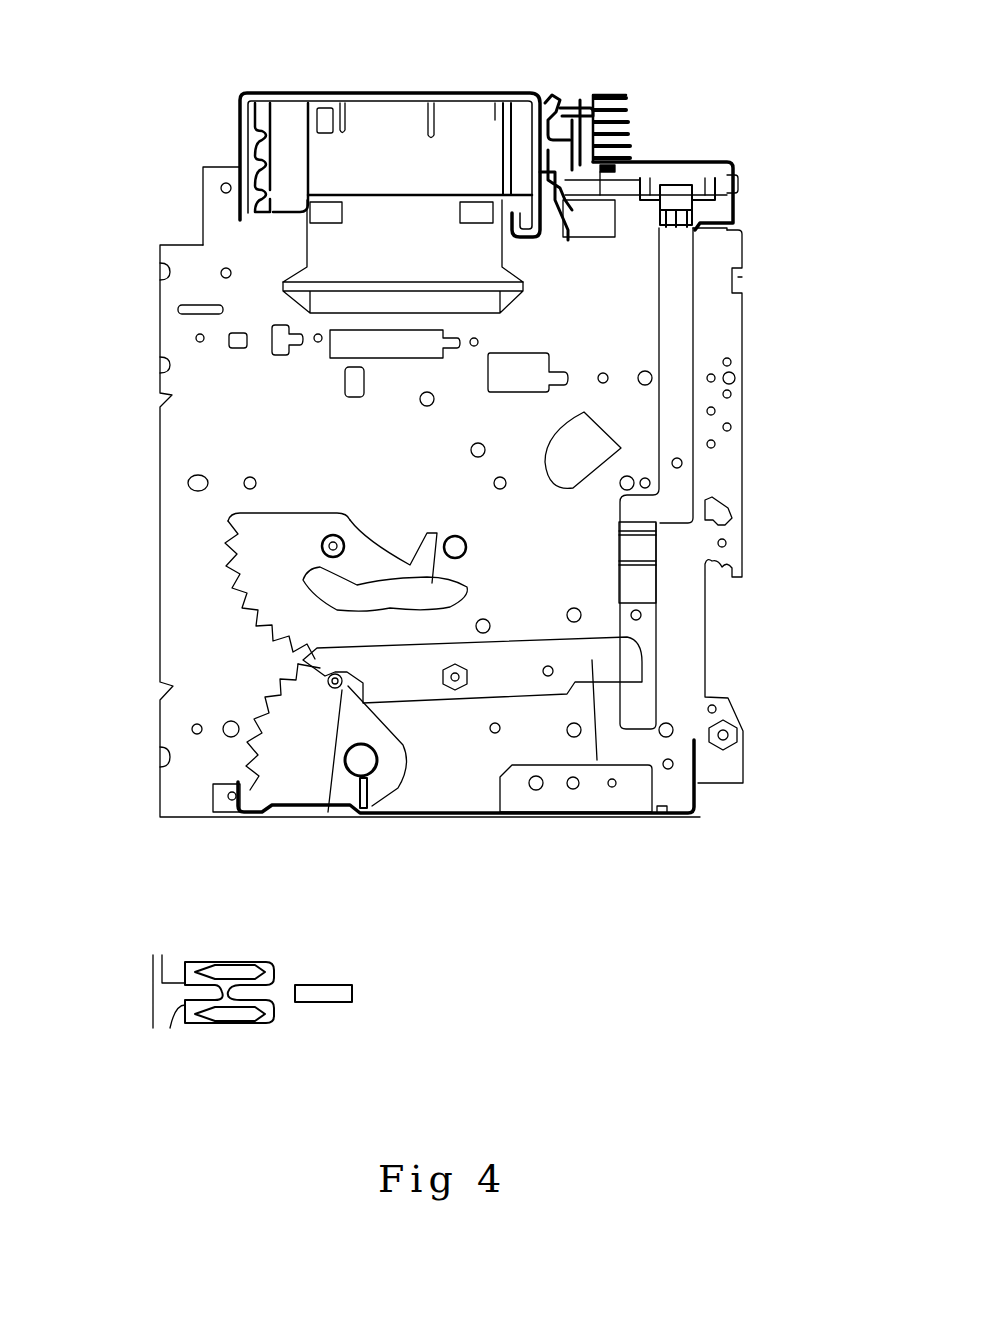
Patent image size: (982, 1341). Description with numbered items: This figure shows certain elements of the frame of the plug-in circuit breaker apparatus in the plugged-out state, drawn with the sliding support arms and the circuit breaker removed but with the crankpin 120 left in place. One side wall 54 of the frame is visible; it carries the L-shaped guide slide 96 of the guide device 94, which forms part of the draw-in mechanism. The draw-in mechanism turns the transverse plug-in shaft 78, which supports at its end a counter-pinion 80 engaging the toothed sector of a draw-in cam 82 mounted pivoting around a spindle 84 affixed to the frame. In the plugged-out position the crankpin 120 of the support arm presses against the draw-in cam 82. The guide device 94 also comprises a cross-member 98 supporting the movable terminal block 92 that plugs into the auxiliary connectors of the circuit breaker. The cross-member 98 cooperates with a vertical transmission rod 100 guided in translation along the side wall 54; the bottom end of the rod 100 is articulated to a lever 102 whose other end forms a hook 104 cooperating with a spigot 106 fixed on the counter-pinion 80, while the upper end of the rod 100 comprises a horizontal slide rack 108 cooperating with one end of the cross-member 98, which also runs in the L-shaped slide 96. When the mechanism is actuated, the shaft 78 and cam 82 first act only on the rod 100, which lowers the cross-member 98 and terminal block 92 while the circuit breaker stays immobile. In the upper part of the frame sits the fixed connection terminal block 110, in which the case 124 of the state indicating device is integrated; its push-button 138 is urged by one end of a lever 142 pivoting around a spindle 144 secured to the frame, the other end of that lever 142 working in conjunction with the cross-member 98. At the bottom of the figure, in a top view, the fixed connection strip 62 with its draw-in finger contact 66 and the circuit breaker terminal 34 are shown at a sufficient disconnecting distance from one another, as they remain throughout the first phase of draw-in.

The terminal 34 is at (328, 995).
The side wall 54 is at (720, 473).
The fixed connection strip 62 is at (165, 1013).
The draw-in finger contact 66 is at (252, 1010).
The transverse plug-in shaft 78 is at (360, 758).
The counter-pinion 80 is at (285, 735).
The draw-in cam 82 is at (257, 570).
The spindle 84 is at (322, 544).
The movable terminal block 92 is at (680, 177).
The guide device 94 is at (695, 255).
The L-shaped guide slide 96 is at (583, 198).
The cross-member 98 is at (728, 175).
The vertical transmission rod 100 is at (680, 343).
The lever 102 is at (597, 760).
The hook 104 is at (310, 660).
The spigot 106 is at (334, 690).
The horizontal slide rack 108 is at (617, 200).
The fixed connection terminal block 110 is at (630, 113).
The crankpin 120 is at (466, 548).
The case 124 is at (588, 108).
The push-button 138 is at (568, 162).
The lever 142 is at (540, 150).
The spindle 144 is at (518, 178).